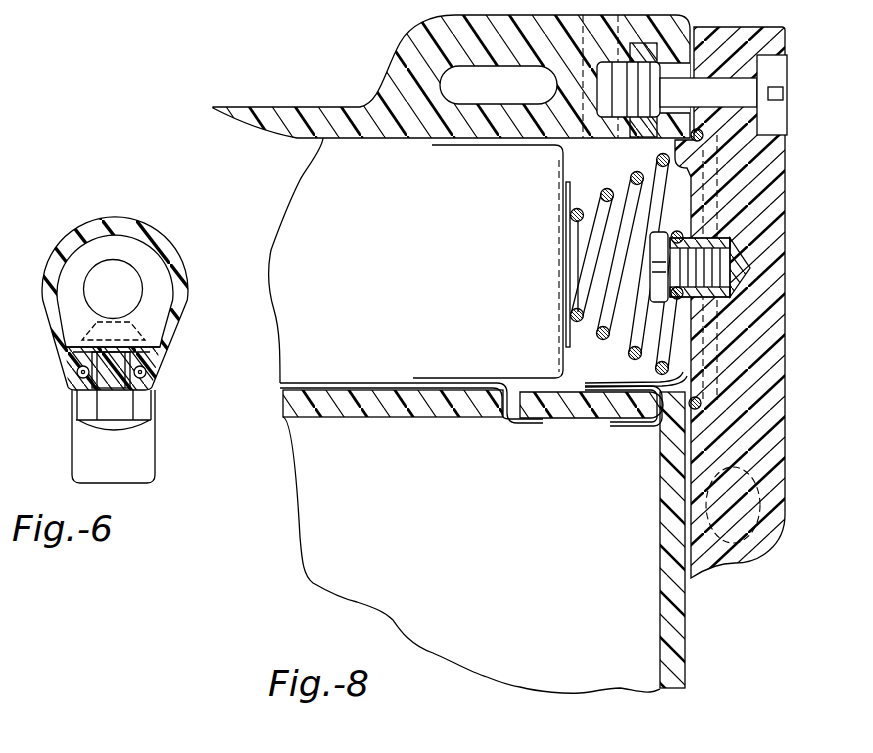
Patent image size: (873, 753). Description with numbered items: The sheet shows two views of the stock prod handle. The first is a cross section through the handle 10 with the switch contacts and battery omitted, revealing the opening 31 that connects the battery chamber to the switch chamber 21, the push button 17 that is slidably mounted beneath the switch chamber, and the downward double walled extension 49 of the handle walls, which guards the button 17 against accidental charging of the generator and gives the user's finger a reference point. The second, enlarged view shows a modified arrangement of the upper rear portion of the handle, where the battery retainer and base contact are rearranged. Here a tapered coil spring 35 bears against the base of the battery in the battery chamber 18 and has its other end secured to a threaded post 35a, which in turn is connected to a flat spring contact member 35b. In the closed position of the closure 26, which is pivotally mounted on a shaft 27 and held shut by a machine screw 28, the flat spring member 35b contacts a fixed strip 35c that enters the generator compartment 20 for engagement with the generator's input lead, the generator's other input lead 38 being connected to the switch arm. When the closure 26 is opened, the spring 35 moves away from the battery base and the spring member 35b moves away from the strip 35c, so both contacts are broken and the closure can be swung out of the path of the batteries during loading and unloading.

In FIG. 6, the opening 31 is at (137, 267).
In FIG. 6, the switch chamber 21 is at (123, 298).
In FIG. 6, the push button 17 is at (155, 428).
In FIG. 6, the downward double walled extension 49 is at (128, 460).
In FIG. 8, the handle 10 is at (353, 76).
In FIG. 8, the battery chamber 18 is at (487, 250).
In FIG. 8, the generator chamber 20 is at (500, 552).
In FIG. 8, the closure 26 is at (785, 246).
In FIG. 8, the shaft 27 is at (730, 577).
In FIG. 8, the machine screw 28 is at (787, 55).
In FIG. 8, the spring contact 35 is at (571, 317).
In FIG. 8, the threaded post 35a is at (657, 248).
In FIG. 8, the flat spring contact member 35b is at (582, 424).
In FIG. 8, the fixed strip 35c is at (633, 426).
In FIG. 8, the input lead 38 is at (520, 428).